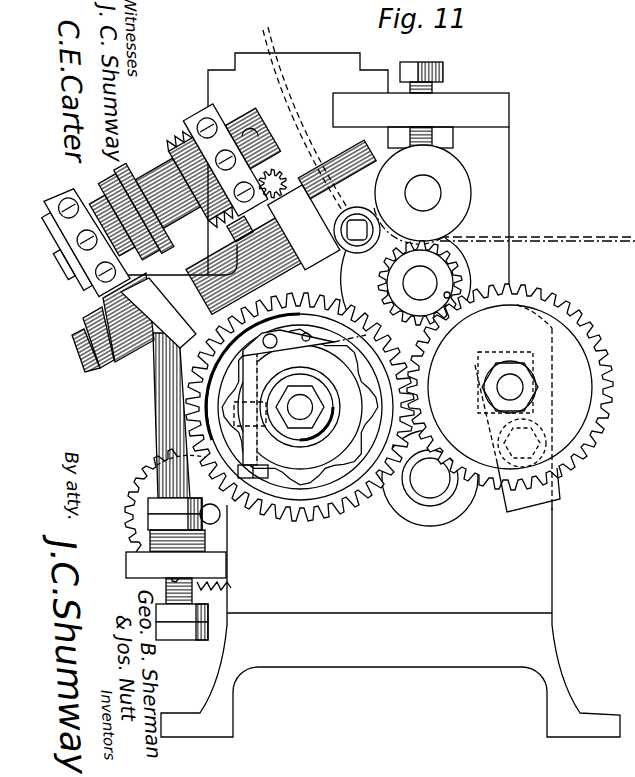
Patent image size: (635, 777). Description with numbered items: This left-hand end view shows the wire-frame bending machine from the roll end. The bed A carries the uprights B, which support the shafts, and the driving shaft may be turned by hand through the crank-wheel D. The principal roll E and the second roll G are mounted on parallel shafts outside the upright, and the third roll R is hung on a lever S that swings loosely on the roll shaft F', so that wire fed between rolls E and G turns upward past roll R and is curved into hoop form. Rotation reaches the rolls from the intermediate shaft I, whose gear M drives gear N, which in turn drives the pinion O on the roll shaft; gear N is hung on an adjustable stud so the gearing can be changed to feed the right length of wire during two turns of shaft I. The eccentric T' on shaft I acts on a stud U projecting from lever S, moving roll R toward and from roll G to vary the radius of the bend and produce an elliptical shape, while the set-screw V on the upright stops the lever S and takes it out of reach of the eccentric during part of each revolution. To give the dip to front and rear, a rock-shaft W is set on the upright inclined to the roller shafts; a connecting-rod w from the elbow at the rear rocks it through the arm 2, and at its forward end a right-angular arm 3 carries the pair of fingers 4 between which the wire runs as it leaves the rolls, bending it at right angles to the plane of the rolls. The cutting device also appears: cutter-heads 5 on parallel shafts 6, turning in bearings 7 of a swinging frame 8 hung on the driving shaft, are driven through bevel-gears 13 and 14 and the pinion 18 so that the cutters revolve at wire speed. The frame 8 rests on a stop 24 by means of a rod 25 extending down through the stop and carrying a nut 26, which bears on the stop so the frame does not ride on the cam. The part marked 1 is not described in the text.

The bearing plate 1 is at (60, 250).
The arm 2 is at (158, 313).
The right-angular arm 3 is at (258, 253).
The fingers 4 is at (338, 169).
The cutter-heads 5 is at (262, 155).
The shafts 6 is at (167, 193).
The bearings 7 is at (225, 160).
The swinging frame 8 is at (225, 253).
The bevel-gear 13 is at (203, 188).
The bevel-gear 14 is at (175, 139).
The pinion 18 is at (127, 215).
The stop 24 is at (176, 569).
The rod 25 is at (161, 415).
The nut 26 is at (125, 537).
The bed A is at (389, 627).
The uprights B is at (390, 621).
The crank-wheel D is at (249, 135).
The principal roll E is at (470, 273).
The roll shaft F' is at (420, 283).
The second roll G is at (422, 153).
The intermediate shaft I is at (300, 407).
The gear M is at (304, 407).
The gear N is at (510, 398).
The pinion O is at (447, 289).
The third roll R is at (357, 223).
The lever S is at (353, 284).
The eccentric T' is at (300, 407).
The stud U is at (304, 343).
The set-screw V is at (251, 415).
The rock-shaft W is at (130, 386).
The connecting-rod w is at (113, 322).